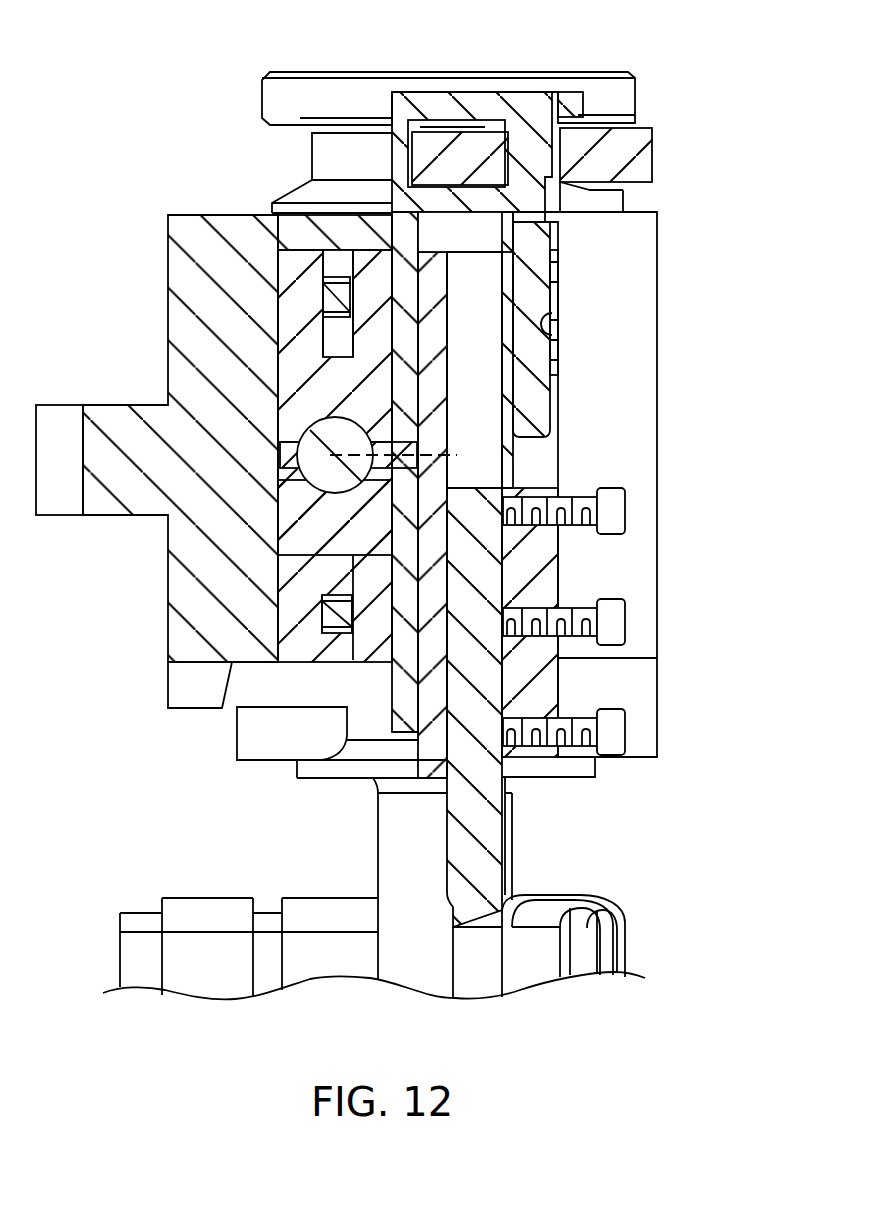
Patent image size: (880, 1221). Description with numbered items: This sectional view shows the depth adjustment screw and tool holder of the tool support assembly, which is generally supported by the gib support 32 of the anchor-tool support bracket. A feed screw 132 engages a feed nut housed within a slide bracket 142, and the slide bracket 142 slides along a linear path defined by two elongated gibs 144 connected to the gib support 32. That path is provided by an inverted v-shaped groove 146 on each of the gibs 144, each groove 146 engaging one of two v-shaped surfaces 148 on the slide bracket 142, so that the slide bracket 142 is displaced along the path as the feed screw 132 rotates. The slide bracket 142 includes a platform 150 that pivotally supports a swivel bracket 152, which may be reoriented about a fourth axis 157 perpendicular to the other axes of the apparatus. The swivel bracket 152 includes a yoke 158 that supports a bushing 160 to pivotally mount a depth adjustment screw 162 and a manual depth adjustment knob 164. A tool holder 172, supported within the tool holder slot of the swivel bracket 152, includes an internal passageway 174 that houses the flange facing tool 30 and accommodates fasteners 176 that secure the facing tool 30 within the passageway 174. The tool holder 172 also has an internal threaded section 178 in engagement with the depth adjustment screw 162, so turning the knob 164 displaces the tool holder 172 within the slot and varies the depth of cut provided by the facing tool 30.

The flange facing tool 30 is at (502, 845).
The gib support 32 is at (163, 315).
The feed screw 132 is at (325, 492).
The slide bracket 142 is at (272, 402).
The gibs 144 is at (280, 267).
The v-shaped groove 146 is at (280, 360).
The v-shaped surfaces 148 is at (278, 363).
The platform 150 is at (365, 662).
The swivel bracket 152 is at (390, 707).
The fourth axis 157 is at (455, 458).
The yoke 158 is at (443, 92).
The bushing 160 is at (588, 96).
The depth adjustment screw 162 is at (552, 268).
The manual depth adjustment knob 164 is at (652, 157).
The tool holder 172 is at (558, 575).
The internal passageway 174 is at (480, 408).
The fasteners 176 is at (627, 733).
The internal threaded section 178 is at (552, 333).